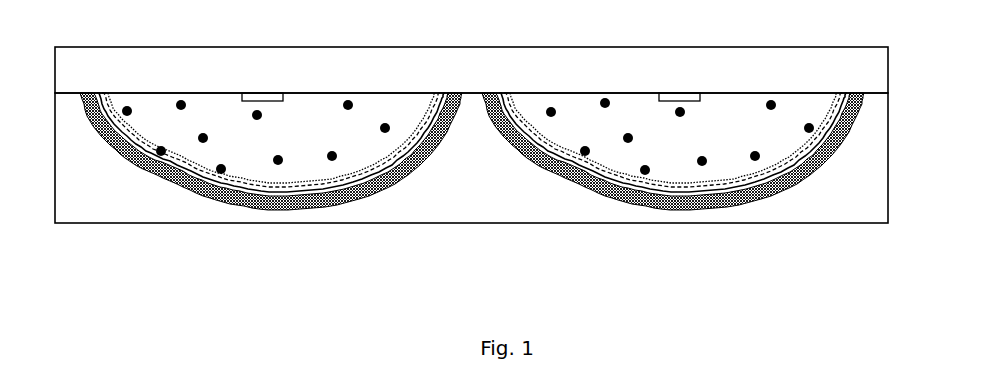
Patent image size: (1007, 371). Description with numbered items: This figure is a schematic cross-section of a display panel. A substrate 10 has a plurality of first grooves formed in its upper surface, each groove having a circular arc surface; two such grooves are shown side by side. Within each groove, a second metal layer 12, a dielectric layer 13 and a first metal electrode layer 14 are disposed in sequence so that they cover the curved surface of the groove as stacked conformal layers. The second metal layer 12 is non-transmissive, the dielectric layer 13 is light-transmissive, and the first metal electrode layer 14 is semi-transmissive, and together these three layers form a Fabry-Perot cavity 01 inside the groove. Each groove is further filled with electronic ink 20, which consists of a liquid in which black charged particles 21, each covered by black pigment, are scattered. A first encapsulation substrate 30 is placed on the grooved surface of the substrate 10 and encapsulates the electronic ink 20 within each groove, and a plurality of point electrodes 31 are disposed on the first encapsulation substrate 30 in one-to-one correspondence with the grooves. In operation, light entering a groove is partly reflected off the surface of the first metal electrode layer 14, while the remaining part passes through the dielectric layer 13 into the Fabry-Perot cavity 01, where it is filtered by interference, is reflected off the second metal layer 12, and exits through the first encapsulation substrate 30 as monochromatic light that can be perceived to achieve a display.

The substrate 10 is at (865, 161).
The first encapsulation substrate 30 is at (870, 67).
The point electrode 31 is at (681, 100).
The Fabry-Perot cavity 01 is at (271, 203).
The second metal layer 12 is at (246, 199).
The dielectric layer 13 is at (280, 193).
The first metal electrode layer 14 is at (191, 257).
The electronic ink 20 is at (733, 171).
The black charged particle 21 is at (811, 137).